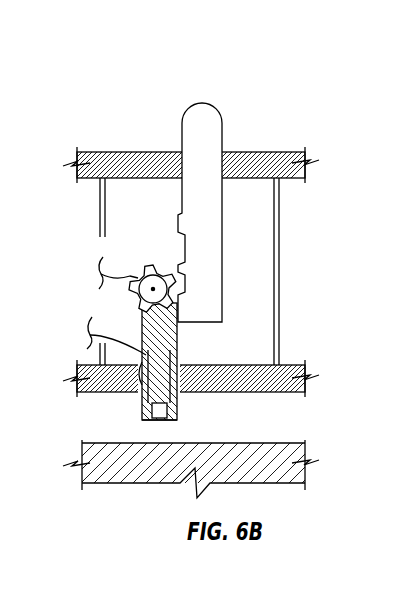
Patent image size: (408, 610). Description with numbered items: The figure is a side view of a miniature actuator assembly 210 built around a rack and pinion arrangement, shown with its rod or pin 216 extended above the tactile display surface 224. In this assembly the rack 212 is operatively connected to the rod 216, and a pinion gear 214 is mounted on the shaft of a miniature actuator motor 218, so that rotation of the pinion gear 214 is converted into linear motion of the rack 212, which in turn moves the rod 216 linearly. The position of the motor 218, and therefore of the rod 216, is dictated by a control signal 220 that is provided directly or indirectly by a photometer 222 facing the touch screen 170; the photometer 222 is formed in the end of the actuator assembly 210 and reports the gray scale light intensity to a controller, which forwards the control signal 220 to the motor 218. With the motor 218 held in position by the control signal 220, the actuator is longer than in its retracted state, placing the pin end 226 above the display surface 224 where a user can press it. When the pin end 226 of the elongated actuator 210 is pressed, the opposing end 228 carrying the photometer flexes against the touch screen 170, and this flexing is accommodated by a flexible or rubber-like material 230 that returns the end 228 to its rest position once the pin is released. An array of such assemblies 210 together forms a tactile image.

The miniature actuator assembly 210 is at (227, 87).
The tactile display surface 224 is at (142, 153).
The pin end 226 is at (213, 138).
The rod 216 is at (232, 212).
The rack 212 is at (183, 262).
The pinion gear 214 is at (143, 262).
The control signal 220 is at (115, 273).
The miniature actuator motor 218 is at (130, 302).
The flexible or rubber-like material 230 is at (204, 365).
The opposing end 228 is at (147, 421).
The photometer 222 is at (168, 421).
The touch screen 170 is at (282, 443).